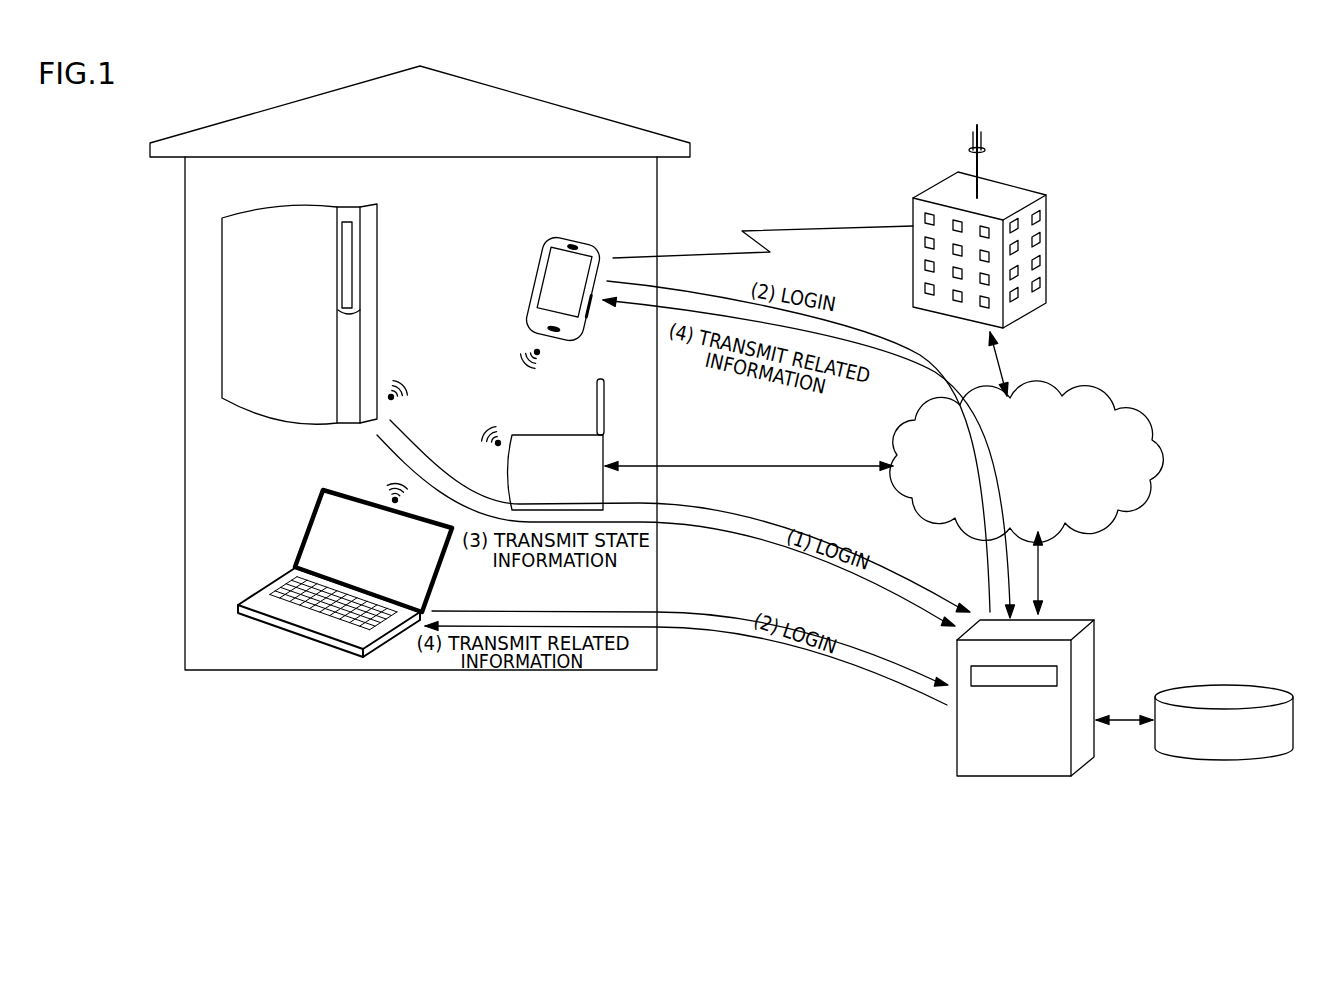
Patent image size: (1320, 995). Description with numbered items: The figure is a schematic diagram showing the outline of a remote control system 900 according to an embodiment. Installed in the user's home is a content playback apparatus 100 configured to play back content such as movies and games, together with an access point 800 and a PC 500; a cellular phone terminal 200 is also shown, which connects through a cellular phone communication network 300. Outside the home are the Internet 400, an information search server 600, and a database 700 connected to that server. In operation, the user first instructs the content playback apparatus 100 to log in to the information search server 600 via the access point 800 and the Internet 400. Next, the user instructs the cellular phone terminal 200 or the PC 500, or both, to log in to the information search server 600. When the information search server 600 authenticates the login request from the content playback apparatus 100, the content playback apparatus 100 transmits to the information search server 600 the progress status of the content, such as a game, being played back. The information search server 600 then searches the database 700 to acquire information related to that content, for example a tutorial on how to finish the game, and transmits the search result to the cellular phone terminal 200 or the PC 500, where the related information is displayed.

The content playback apparatus 100 is at (312, 205).
The cellular phone terminal 200 is at (532, 285).
The cellular phone communication network 300 is at (1025, 188).
The Internet 400 is at (1100, 395).
The PC 500 is at (445, 562).
The information search server 600 is at (1067, 617).
The database 700 is at (1225, 683).
The access point 800 is at (553, 432).
The remote control system 900 is at (750, 868).